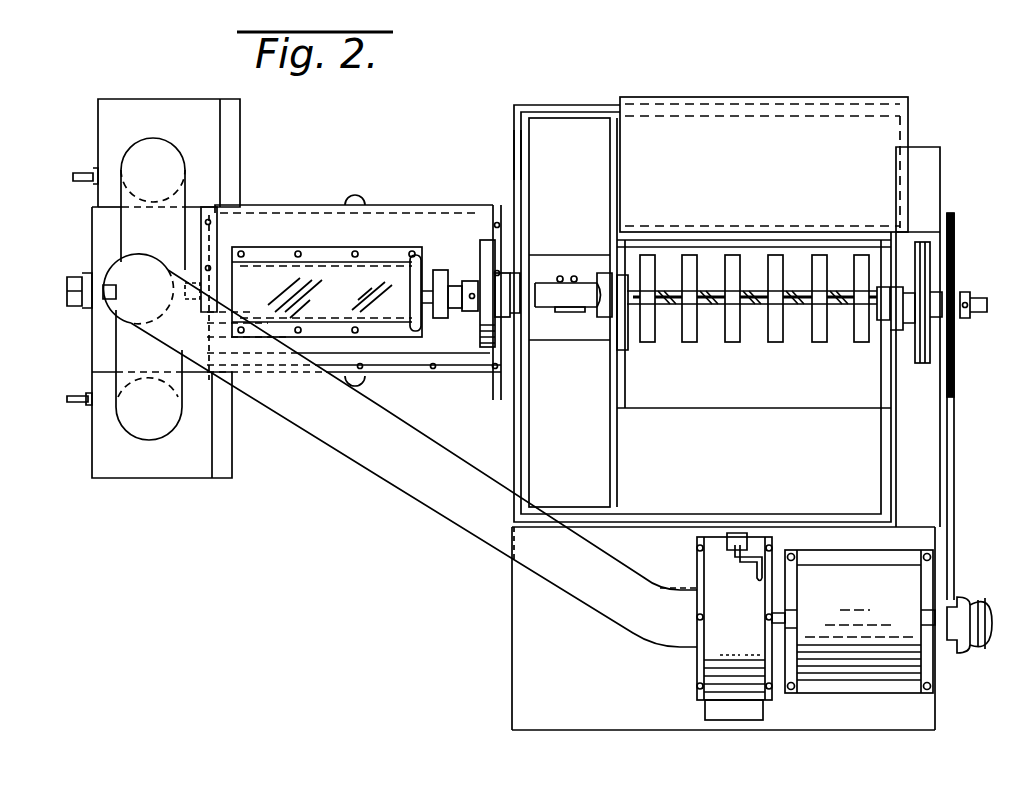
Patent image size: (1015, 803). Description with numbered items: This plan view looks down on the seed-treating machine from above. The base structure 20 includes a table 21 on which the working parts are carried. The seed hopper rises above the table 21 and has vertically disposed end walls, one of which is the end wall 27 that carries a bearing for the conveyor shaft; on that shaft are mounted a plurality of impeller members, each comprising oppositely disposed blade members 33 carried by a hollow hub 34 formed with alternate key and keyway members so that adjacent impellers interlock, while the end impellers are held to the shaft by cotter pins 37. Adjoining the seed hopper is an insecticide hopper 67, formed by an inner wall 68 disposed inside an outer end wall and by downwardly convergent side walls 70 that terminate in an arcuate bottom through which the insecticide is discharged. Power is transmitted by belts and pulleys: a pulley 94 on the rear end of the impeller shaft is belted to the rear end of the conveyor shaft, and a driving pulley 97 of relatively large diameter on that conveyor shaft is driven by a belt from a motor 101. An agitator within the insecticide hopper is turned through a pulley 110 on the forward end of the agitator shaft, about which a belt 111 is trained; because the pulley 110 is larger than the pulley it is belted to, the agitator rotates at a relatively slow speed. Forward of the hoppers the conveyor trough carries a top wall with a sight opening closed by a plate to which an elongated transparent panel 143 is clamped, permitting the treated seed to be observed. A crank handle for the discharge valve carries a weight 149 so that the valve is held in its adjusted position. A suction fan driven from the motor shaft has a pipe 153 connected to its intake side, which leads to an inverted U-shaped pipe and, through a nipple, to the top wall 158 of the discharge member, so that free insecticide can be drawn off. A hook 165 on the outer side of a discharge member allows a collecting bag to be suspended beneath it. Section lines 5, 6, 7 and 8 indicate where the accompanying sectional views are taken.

The section line 5- 5 is at (32, 260).
The section line 6- 6 is at (798, 140).
The section line 7- 7 is at (354, 200).
The section line 8- 8 is at (156, 127).
The base structure 20 is at (510, 654).
The table 21 is at (723, 690).
The end wall 27 is at (893, 432).
The blade members 33 is at (792, 327).
The hollow hub 34 is at (711, 317).
The cotter pins 37 is at (858, 317).
The insecticide hopper 67 is at (525, 133).
The inner wall 68 is at (532, 192).
The side walls 70 is at (586, 116).
The pulley 94 is at (932, 262).
The driving pulley 97 is at (960, 379).
The motor 101 is at (860, 621).
The pulley 110 is at (477, 251).
The belt 111 is at (483, 347).
The transparent panel 143 is at (313, 282).
The weight 149 is at (73, 308).
The pipe 153 is at (457, 515).
The top wall 158 is at (190, 255).
The hook 165 is at (70, 404).